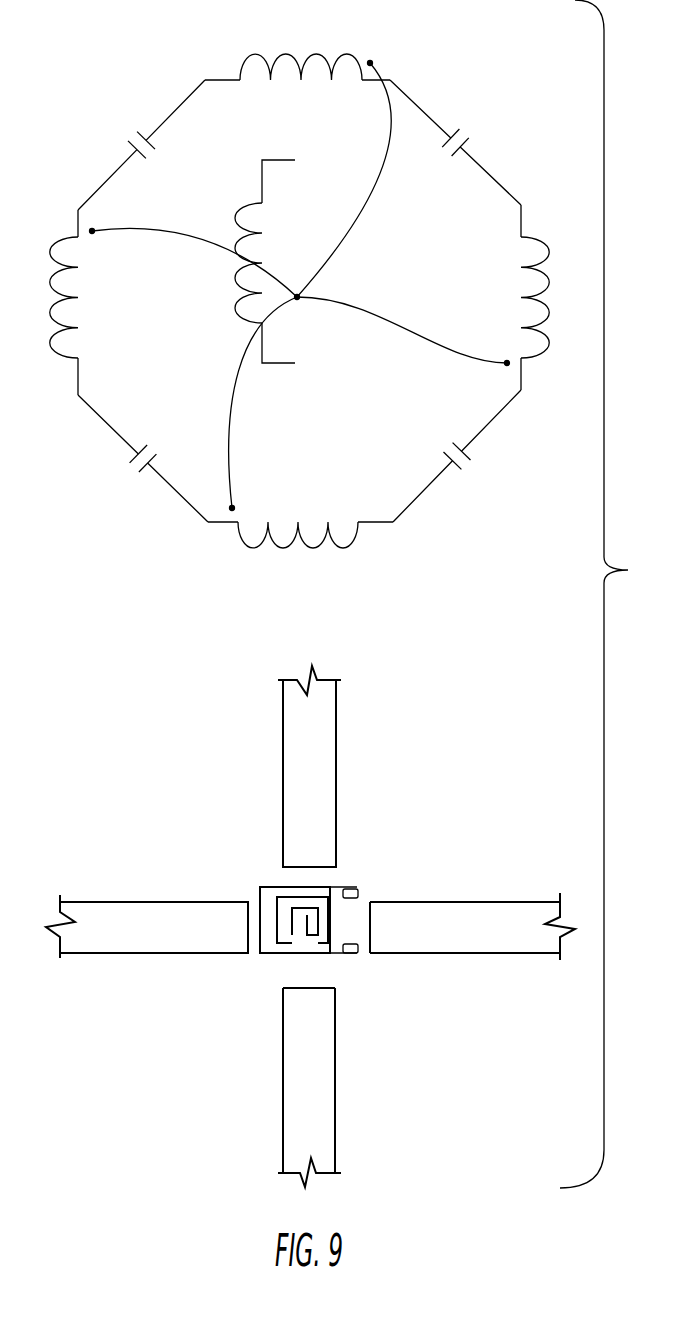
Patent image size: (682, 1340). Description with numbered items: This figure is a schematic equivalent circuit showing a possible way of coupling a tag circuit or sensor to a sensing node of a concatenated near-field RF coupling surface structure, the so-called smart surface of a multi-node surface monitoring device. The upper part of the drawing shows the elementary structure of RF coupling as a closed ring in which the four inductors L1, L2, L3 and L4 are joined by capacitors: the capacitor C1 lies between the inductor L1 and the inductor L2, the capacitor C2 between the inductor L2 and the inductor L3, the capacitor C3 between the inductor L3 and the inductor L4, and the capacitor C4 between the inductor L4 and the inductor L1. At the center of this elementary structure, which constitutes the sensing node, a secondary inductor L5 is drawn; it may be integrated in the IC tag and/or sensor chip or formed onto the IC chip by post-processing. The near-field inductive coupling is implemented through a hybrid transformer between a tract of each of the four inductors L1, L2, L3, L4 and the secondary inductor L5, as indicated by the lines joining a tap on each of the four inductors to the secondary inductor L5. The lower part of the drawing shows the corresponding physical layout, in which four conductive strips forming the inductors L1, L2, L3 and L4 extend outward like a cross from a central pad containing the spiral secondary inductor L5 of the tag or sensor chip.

The first inductor L1 is at (135, 584).
The second inductor L2 is at (297, 440).
The third inductor L3 is at (472, 582).
The fourth inductor L4 is at (300, 854).
The secondary inductor L5 is at (368, 988).
The capacitor C1 is at (141, 145).
The capacitor C2 is at (455, 142).
The capacitor C3 is at (457, 456).
The capacitor C4 is at (143, 458).